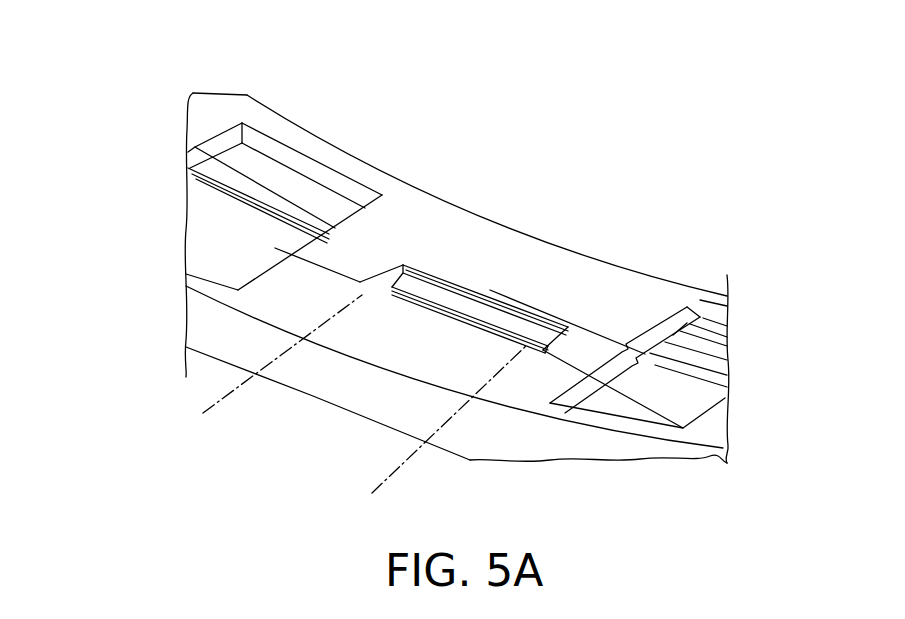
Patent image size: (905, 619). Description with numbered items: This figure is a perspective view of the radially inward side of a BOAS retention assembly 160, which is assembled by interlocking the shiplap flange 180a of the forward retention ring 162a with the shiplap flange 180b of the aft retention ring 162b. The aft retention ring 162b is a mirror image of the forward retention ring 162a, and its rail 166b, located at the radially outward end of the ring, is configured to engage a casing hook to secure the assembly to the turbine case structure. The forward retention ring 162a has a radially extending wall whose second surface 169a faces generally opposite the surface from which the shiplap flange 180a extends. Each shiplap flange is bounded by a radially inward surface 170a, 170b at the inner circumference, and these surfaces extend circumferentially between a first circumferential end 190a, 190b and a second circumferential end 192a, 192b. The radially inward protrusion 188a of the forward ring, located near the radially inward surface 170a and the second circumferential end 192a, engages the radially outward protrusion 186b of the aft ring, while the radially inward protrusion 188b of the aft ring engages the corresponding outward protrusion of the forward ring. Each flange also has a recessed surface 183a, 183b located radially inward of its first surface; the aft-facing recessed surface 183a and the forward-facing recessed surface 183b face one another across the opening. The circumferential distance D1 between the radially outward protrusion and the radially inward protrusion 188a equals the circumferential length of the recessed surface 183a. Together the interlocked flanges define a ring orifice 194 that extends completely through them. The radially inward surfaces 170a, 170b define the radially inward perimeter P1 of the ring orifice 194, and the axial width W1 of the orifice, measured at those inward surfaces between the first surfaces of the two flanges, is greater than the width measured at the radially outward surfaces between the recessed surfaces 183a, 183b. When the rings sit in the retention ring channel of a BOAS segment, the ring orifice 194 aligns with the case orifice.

The BOAS retention assembly 160 is at (170, 88).
The forward retention ring 162a is at (210, 332).
The aft retention ring 162b is at (407, 178).
The rail 166b is at (247, 175).
The second surface 169a is at (485, 435).
The radially inward surface 170a is at (440, 355).
The radially inward surface 170b is at (608, 355).
The shiplap flange 180a is at (305, 282).
The shiplap flange 180b is at (500, 278).
The recessed surface 183a is at (490, 334).
The recessed surface 183b is at (543, 350).
The radially outward protrusion 186b is at (643, 365).
The radially inward protrusion 188a is at (631, 347).
The radially inward protrusion 188b is at (358, 280).
The first circumferential end 190a is at (268, 283).
The first circumferential end 190b is at (700, 315).
The second circumferential end 192a is at (592, 388).
The second circumferential end 192b is at (322, 226).
The ring orifice 194 is at (430, 256).
The axial width W1 is at (460, 278).
The radially inward perimeter P1 is at (418, 322).
The circumferential distance D1 is at (393, 467).